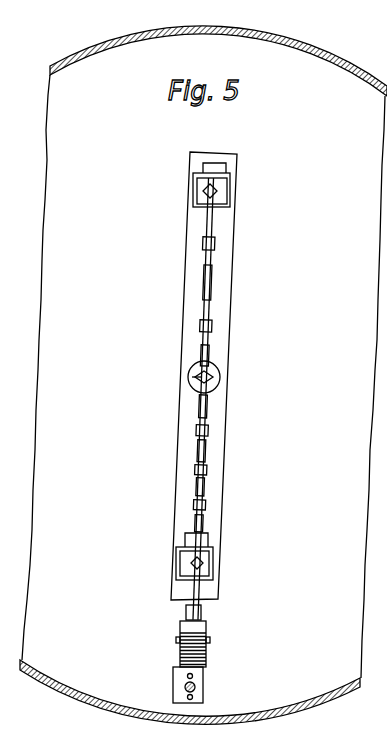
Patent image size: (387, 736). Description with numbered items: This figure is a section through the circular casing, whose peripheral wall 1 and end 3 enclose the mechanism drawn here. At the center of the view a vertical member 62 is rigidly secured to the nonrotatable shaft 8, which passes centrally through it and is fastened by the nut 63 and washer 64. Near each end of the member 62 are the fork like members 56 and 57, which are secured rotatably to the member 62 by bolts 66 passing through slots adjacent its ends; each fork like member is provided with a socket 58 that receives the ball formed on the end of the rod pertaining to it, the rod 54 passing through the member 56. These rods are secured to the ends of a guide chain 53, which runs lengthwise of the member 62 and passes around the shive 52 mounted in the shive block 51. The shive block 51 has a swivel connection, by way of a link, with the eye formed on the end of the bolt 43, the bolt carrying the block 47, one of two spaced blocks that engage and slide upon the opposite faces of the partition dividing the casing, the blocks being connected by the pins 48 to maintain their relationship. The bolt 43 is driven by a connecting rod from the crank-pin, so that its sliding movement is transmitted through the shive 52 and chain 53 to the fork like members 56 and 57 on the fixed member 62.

The peripheral wall 1 is at (203, 375).
The end 3 is at (116, 125).
The nonrotatable shaft 8 is at (192, 377).
The bolt 43 is at (196, 688).
The block 47 is at (203, 677).
The pins 48 is at (187, 677).
The shive block 51 is at (206, 651).
The shive 52 is at (201, 612).
The guide chain 53 is at (203, 302).
The rod 54 is at (195, 196).
The fork like member 56 is at (200, 185).
The fork like member 57 is at (207, 563).
The socket 58 is at (208, 540).
The vertical member 62 is at (224, 460).
The nut 63 is at (214, 381).
The washer 64 is at (218, 370).
The bolts 66 is at (232, 192).